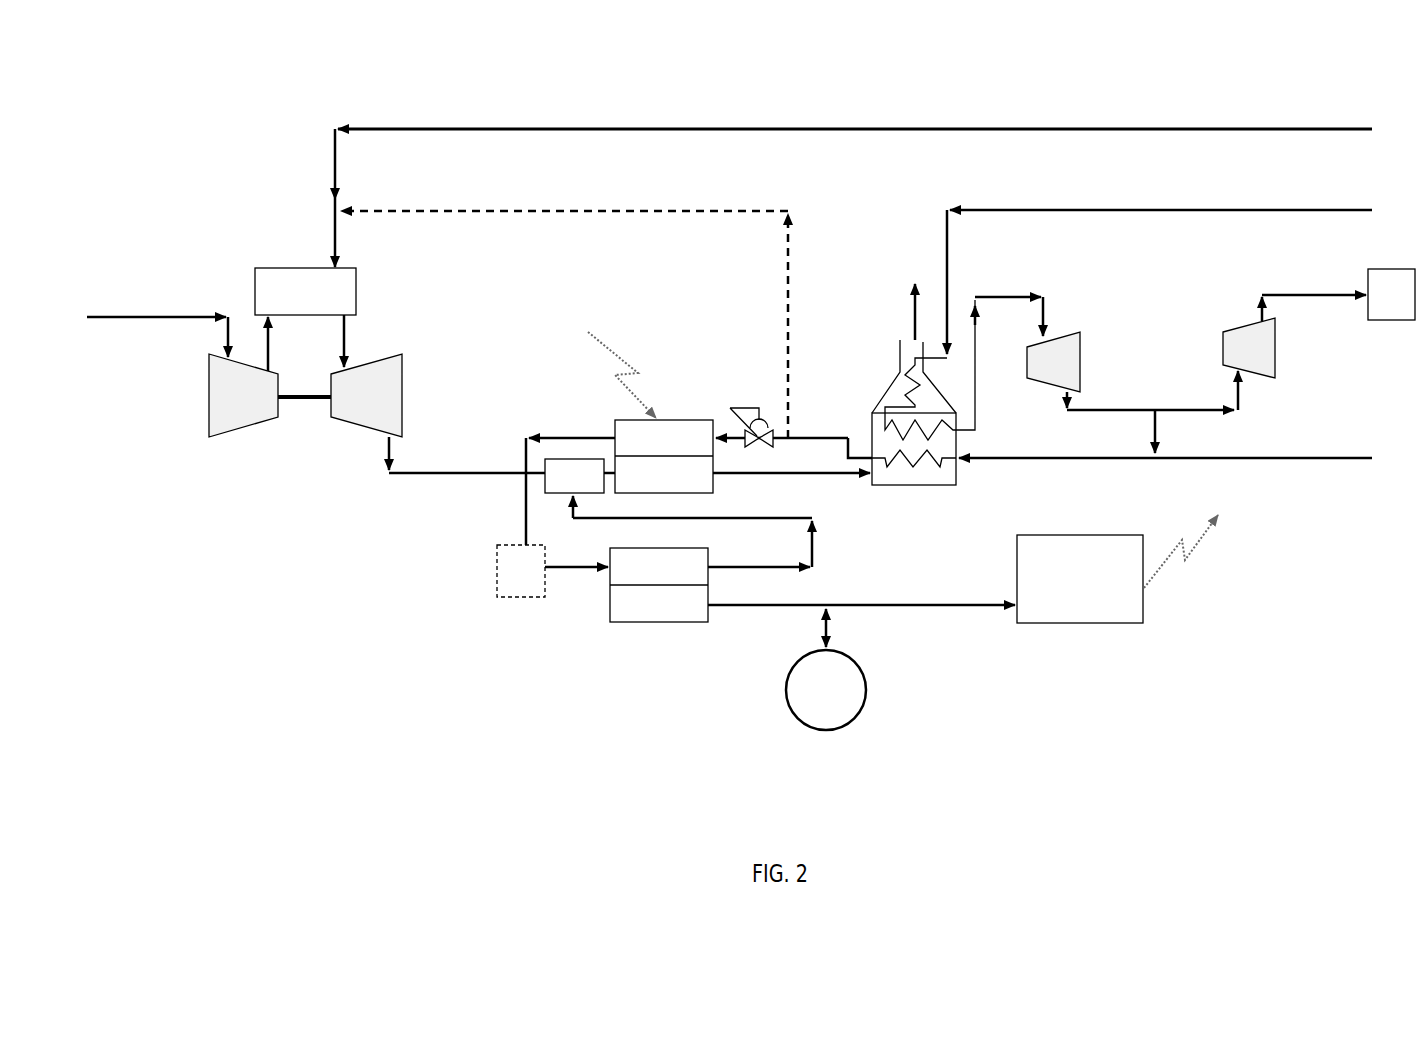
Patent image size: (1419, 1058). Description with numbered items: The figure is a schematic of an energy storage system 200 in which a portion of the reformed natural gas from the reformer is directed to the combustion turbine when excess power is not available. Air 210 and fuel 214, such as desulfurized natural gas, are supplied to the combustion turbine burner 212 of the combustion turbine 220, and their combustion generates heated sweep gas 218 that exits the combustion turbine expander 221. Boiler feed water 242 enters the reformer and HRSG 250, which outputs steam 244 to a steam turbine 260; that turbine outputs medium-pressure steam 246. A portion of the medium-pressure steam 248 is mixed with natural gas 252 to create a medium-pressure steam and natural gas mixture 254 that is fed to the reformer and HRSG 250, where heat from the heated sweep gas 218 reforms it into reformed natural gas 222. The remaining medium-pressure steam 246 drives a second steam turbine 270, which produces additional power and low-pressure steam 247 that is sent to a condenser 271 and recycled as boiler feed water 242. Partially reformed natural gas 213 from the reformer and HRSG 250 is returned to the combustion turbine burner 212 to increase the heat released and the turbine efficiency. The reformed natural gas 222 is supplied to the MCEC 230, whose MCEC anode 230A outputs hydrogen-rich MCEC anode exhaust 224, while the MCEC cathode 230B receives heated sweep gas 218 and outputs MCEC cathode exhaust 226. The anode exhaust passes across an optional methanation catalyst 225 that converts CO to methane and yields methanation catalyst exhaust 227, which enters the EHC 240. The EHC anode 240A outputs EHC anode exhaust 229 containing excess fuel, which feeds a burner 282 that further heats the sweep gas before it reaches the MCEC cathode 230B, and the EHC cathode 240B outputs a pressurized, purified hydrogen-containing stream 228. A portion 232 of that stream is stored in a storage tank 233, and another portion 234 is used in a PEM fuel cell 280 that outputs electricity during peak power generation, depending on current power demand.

The energy storage system 200 is at (237, 103).
The air 210 is at (150, 316).
The combustion turbine burner 212 is at (285, 265).
The partially reformed natural gas 213 is at (505, 207).
The fuel 214 is at (472, 128).
The heated sweep gas 218 is at (478, 472).
The combustion turbine 220 is at (296, 463).
The combustion turbine expander 221 is at (404, 375).
The reformed natural gas 222 is at (838, 433).
The MCEC anode exhaust 224 is at (525, 532).
The methanation catalyst 225 is at (496, 568).
The MCEC cathode exhaust 226 is at (750, 480).
The methanation catalyst exhaust 227 is at (572, 568).
The purified hydrogen-containing stream 228 is at (758, 606).
The EHC anode exhaust 229 is at (780, 570).
The MCEC 230 is at (690, 418).
The MCEC anode 230A is at (635, 423).
The MCEC cathode 230B is at (667, 478).
The portion of the hydrogen-containing stream 232 is at (830, 630).
The storage tank 233 is at (867, 690).
The portion of the hydrogen-containing stream 234 is at (958, 606).
The EHC 240 is at (697, 622).
The EHC anode 240A is at (612, 556).
The EHC cathode 240B is at (621, 603).
The boiler feed water 242 is at (1080, 207).
The steam 244 is at (1015, 292).
The medium-pressure steam 246 is at (1135, 408).
The low-pressure steam 247 is at (1335, 298).
The portion of the medium-pressure steam 248 is at (1150, 452).
The reformer and HRSG 250 is at (880, 395).
The natural gas 252 is at (1330, 462).
The medium-pressure steam and natural gas mixture 254 is at (1035, 452).
The steam turbine 260 is at (1083, 345).
The steam turbine 270 is at (1228, 330).
The condenser 271 is at (1378, 268).
The PEM fuel cell 280 is at (1075, 530).
The burner 282 is at (543, 484).